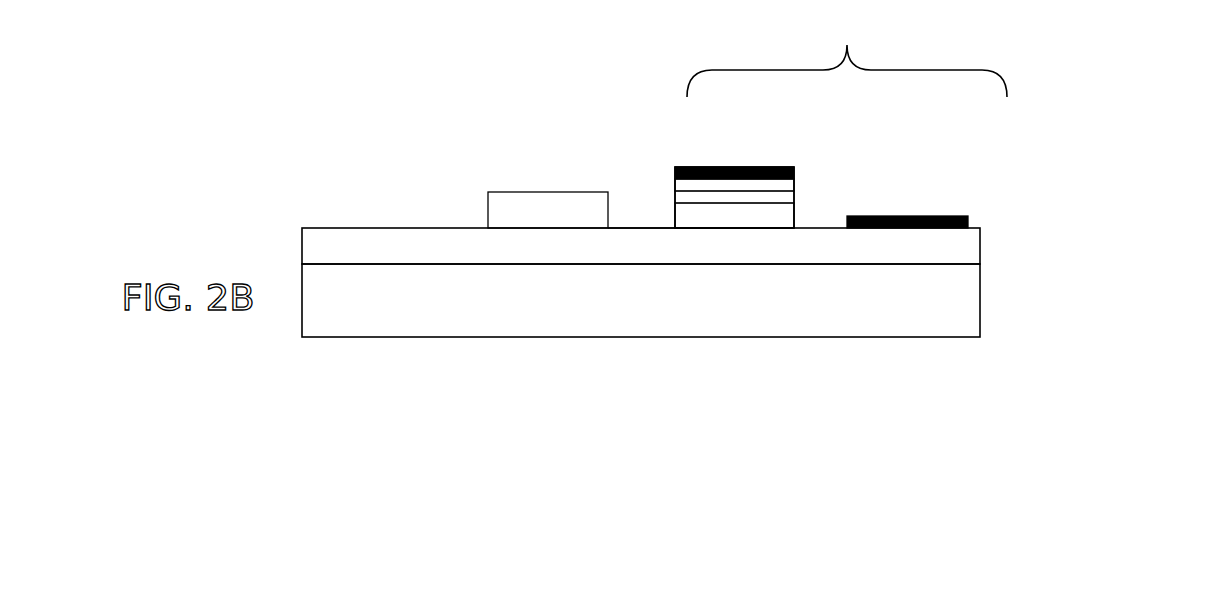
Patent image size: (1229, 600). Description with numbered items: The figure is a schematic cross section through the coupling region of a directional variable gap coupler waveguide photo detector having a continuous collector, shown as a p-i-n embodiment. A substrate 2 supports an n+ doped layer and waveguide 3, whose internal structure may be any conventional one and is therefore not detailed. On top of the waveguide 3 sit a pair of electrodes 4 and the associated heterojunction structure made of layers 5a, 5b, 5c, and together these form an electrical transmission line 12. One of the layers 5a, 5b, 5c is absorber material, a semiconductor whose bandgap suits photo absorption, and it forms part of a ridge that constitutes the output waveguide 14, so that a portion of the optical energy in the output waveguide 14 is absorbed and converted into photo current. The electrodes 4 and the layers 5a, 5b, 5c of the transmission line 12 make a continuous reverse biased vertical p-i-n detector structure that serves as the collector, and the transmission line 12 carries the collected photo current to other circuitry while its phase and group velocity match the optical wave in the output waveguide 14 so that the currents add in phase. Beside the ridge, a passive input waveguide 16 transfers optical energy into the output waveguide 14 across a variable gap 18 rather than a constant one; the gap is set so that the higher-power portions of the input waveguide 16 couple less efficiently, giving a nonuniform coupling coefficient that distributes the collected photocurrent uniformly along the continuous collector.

The substrate 2 is at (981, 311).
The n+ doped layer and waveguide 3 is at (996, 251).
The electrodes 4 is at (739, 157).
The heterojunction structure layer 5a is at (808, 185).
The heterojunction structure layer 5b is at (796, 201).
The heterojunction structure layer 5c is at (685, 225).
The electrical transmission line 12 is at (841, 118).
The output waveguide 14 is at (690, 147).
The passive input waveguide 16 is at (518, 192).
The variable gap 18 is at (624, 169).